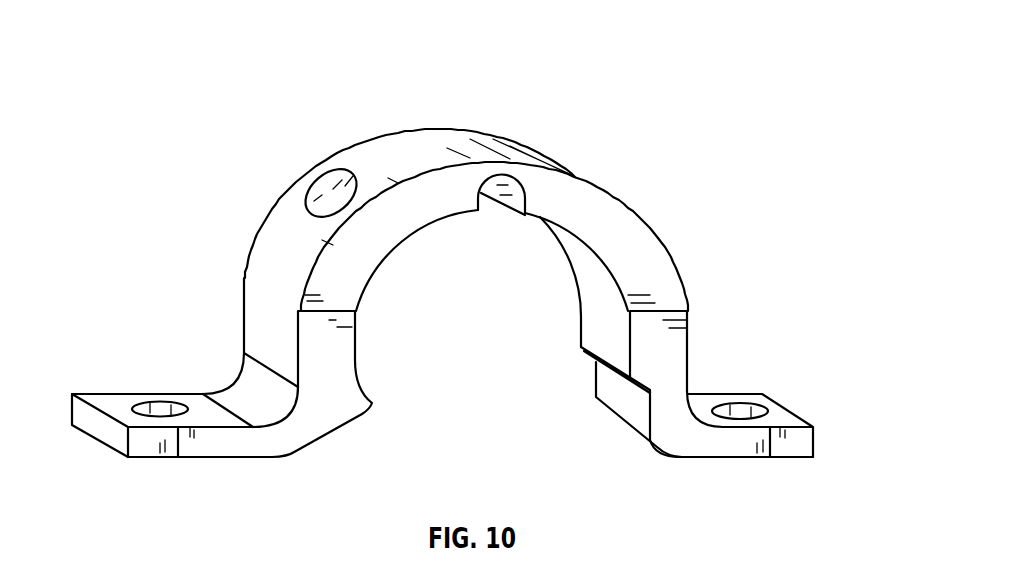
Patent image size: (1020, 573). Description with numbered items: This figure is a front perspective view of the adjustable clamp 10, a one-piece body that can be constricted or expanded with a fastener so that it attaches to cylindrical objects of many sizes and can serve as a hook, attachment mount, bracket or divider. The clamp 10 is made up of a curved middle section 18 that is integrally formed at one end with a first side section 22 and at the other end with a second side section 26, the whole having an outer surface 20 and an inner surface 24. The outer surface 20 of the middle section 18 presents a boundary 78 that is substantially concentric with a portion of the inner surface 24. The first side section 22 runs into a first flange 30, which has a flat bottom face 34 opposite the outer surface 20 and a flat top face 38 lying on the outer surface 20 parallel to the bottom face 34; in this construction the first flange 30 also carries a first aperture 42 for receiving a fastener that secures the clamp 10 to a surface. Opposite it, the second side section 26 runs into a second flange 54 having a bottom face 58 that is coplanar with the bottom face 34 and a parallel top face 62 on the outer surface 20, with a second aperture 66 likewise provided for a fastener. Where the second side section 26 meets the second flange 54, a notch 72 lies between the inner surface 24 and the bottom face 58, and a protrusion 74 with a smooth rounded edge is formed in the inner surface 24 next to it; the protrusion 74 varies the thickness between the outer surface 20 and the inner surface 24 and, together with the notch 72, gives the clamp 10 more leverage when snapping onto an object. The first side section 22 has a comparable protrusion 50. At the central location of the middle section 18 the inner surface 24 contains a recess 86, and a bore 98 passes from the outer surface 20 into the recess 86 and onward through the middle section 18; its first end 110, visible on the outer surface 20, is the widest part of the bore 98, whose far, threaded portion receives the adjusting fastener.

The adjustable clamp 10 is at (758, 38).
The middle section 18 is at (466, 116).
The outer surface 20 is at (680, 253).
The first side section 22 is at (230, 293).
The inner surface 24 is at (555, 288).
The second side section 26 is at (711, 311).
The first flange 30 is at (153, 448).
The bottom face 34 is at (196, 459).
The top face 38 is at (104, 400).
The first aperture 42 is at (157, 401).
The protrusion 50 is at (372, 403).
The second flange 54 is at (807, 447).
The bottom face 58 is at (733, 459).
The top face 62 is at (780, 423).
The second aperture 66 is at (730, 403).
The notch 72 is at (612, 413).
The protrusion 74 is at (582, 350).
The boundary 78 is at (678, 201).
The recess 86 is at (492, 216).
The bore 98 is at (340, 178).
The first end 110 is at (318, 188).